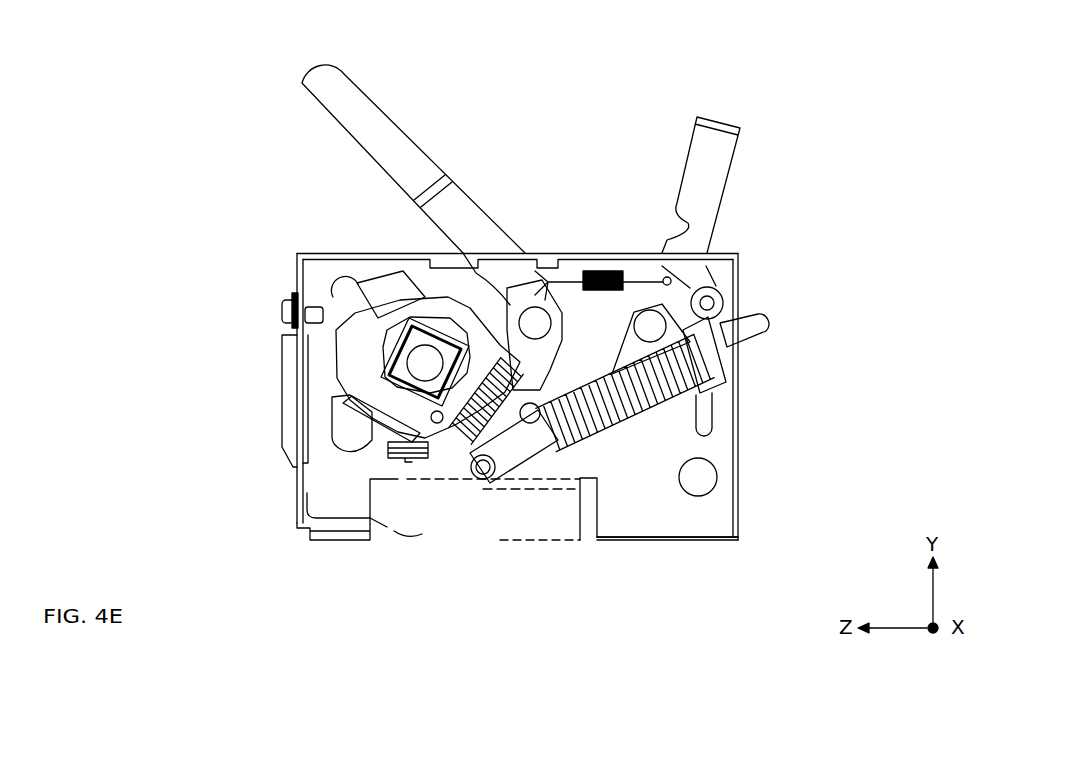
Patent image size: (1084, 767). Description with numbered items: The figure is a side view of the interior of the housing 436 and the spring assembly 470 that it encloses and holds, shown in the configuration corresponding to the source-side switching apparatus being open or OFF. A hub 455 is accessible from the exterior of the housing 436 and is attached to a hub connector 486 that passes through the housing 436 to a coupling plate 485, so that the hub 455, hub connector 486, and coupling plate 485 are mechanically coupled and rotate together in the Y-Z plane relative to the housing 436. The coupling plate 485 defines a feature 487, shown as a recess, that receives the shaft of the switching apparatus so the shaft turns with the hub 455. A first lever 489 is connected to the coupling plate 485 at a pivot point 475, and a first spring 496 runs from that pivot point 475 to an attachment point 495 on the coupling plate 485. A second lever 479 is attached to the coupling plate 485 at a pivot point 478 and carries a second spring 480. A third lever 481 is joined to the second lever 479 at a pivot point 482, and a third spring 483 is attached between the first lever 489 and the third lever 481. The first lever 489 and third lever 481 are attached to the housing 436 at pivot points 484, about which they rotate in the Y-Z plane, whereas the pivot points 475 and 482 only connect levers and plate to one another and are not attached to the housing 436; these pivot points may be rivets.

The housing 436 is at (722, 541).
The hub 455 is at (361, 522).
The spring assembly 470 is at (745, 497).
The pivot point 475 is at (522, 345).
The pivot point 478 is at (484, 480).
The second lever 479 is at (740, 322).
The second spring 480 is at (598, 415).
The third lever 481 is at (740, 120).
The pivot point 482 is at (653, 398).
The third spring 483 is at (603, 273).
The pivot points 484 is at (645, 303).
The coupling plate 485 is at (282, 418).
The hub connector 486 is at (395, 352).
The feature 487 is at (392, 362).
The first lever 489 is at (302, 83).
The attachment point 495 is at (463, 447).
The first spring 496 is at (492, 390).